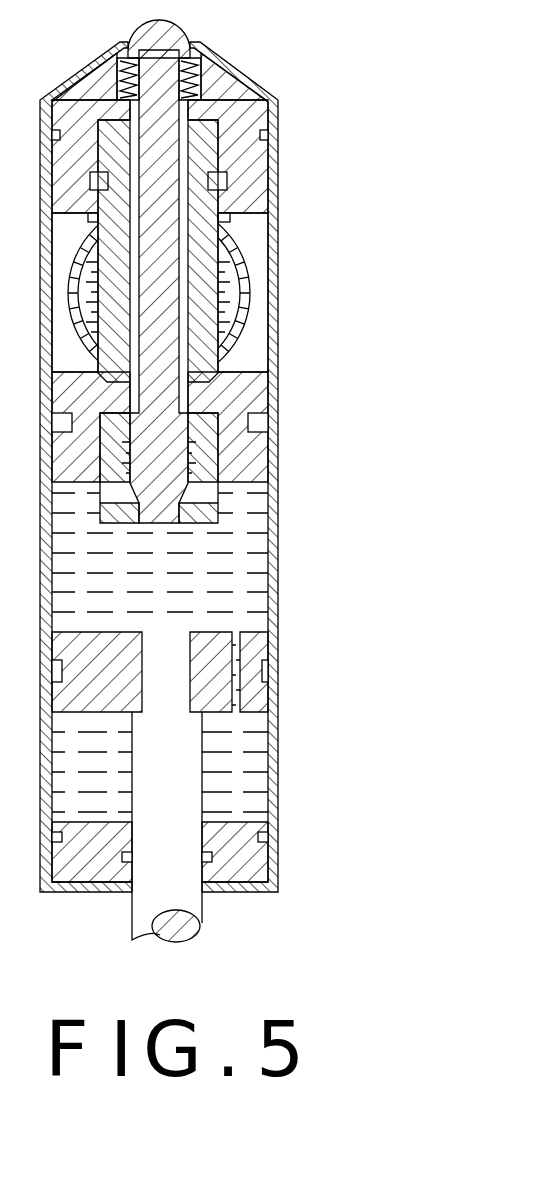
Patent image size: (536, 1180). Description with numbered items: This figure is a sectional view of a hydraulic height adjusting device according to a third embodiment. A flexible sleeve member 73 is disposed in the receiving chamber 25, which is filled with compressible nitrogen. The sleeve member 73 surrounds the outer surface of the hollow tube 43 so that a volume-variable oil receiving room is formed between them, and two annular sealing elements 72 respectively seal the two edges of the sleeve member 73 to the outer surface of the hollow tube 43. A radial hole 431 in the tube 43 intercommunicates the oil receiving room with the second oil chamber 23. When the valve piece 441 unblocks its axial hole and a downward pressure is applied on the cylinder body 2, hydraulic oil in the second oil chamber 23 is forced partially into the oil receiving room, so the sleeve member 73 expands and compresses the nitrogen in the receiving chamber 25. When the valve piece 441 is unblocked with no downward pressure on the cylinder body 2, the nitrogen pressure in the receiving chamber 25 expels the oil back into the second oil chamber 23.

The cylinder body 2 is at (356, 406).
The second oil chamber 23 is at (389, 522).
The receiving chamber 25 is at (401, 312).
The hollow tube 43 is at (208, 162).
The radial hole 431 is at (222, 362).
The valve piece 441 is at (408, 482).
The annular sealing elements 72 is at (222, 222).
The flexible sleeve member 73 is at (230, 282).